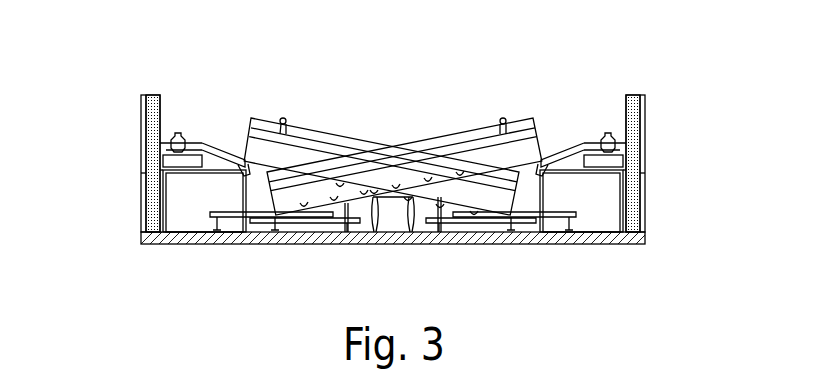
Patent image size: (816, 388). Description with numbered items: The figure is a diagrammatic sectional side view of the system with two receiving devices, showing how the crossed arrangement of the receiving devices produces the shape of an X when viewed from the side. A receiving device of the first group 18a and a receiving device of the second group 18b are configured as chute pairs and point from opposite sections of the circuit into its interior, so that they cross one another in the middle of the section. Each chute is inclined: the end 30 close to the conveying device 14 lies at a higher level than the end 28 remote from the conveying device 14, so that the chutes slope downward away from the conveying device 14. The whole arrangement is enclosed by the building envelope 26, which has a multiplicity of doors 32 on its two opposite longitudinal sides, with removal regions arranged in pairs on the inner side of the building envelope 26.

The conveying device 14 is at (192, 143).
The first group of receiving devices 18a is at (518, 123).
The second group of receiving devices 18b is at (265, 122).
The building envelope 26 is at (647, 103).
The end of the receiving device remote from the conveying device 28 is at (303, 197).
The end of the receiving device close to the conveying device 30 is at (562, 148).
The doors 32 is at (140, 195).